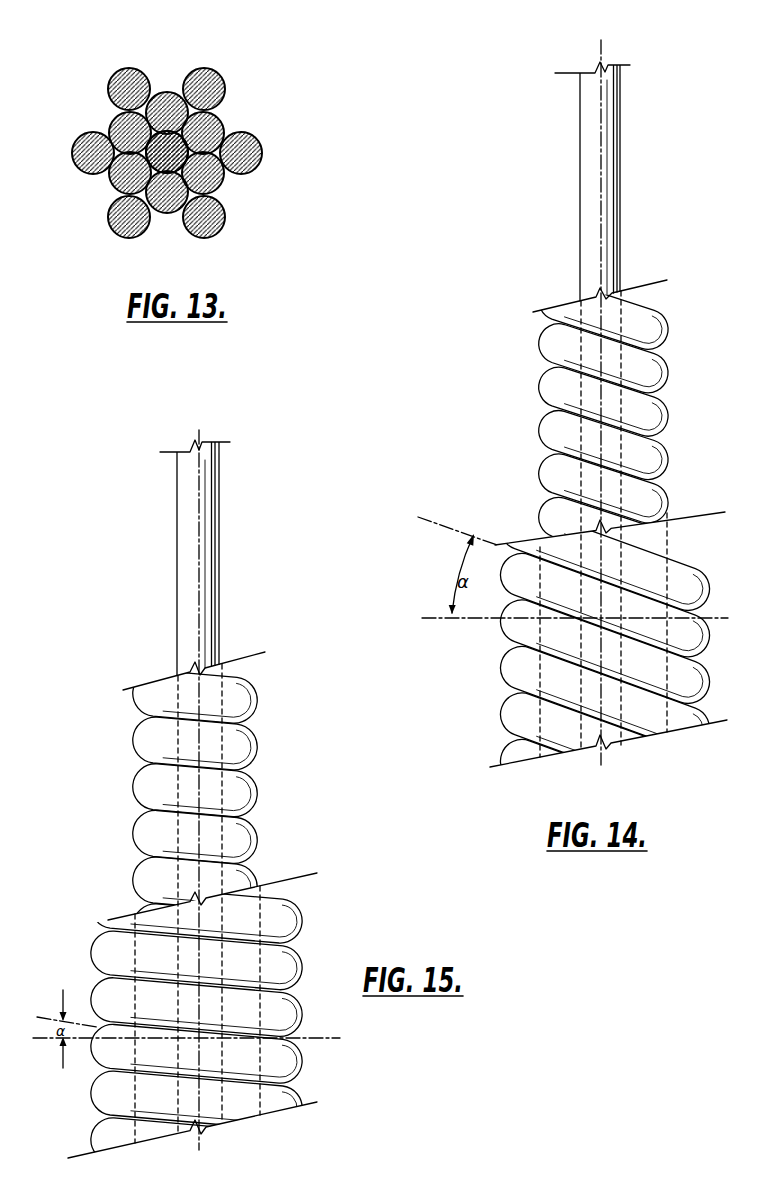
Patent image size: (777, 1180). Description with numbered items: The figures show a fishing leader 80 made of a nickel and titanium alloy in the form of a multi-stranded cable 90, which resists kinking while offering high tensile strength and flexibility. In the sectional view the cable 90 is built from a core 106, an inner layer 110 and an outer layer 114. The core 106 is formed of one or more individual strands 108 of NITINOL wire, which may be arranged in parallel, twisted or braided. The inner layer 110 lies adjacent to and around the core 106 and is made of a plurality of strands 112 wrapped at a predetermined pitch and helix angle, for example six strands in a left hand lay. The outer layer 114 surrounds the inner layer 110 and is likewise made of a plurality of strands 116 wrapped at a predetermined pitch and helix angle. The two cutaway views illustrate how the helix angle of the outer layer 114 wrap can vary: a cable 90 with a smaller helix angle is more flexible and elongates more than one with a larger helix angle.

In FIG. 14, the fishing leader 80 is at (476, 698).
In FIG. 14, the multi-stranded cable 90 is at (690, 550).
In FIG. 13, the core 106 is at (123, 185).
In FIG. 14, the core 106 is at (603, 112).
In FIG. 15, the core 106 is at (210, 472).
In FIG. 13, the strand 108 is at (167, 132).
In FIG. 14, the strand 108 is at (607, 220).
In FIG. 15, the strand 108 is at (205, 522).
In FIG. 13, the inner layer 110 is at (212, 127).
In FIG. 14, the inner layer 110 is at (648, 417).
In FIG. 15, the inner layer 110 is at (233, 785).
In FIG. 13, the strand 112 is at (85, 160).
In FIG. 14, the strand 112 is at (638, 403).
In FIG. 15, the strand 112 is at (235, 690).
In FIG. 13, the outer layer 114 is at (252, 140).
In FIG. 14, the outer layer 114 is at (513, 633).
In FIG. 15, the outer layer 114 is at (123, 1067).
In FIG. 13, the strand 116 is at (205, 68).
In FIG. 14, the strand 116 is at (660, 585).
In FIG. 15, the strand 116 is at (258, 930).